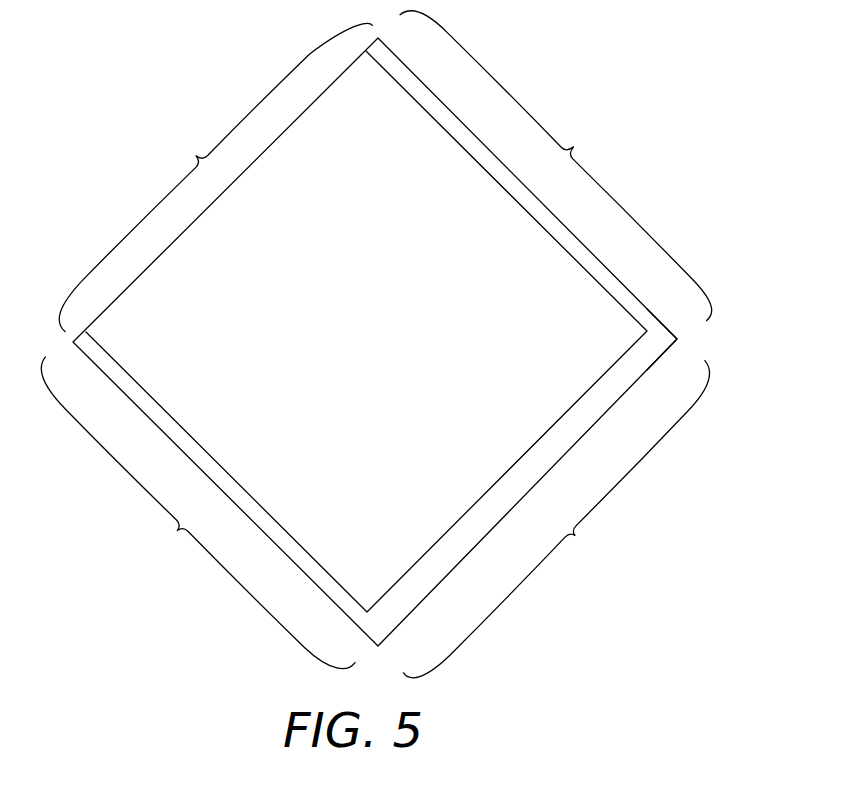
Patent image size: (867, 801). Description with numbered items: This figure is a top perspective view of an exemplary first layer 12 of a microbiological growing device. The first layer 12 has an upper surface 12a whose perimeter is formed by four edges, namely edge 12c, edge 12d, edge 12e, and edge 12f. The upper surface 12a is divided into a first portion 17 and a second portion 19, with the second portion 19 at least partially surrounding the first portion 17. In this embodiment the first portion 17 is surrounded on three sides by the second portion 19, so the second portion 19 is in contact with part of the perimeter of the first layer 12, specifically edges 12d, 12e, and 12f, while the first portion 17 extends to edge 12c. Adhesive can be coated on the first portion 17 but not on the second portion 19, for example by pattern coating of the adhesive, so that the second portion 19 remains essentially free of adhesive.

The first layer 12 is at (604, 62).
The upper surface 12a is at (663, 341).
The edge 12c is at (215, 177).
The edge 12d is at (556, 166).
The edge 12e is at (557, 519).
The edge 12f is at (198, 513).
The first portion 17 is at (373, 413).
The second portion 19 is at (442, 113).